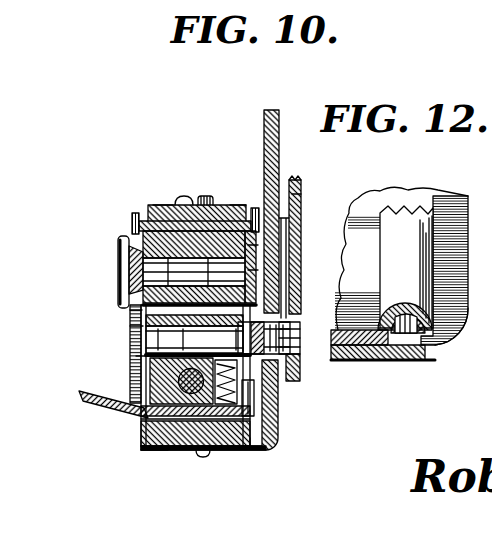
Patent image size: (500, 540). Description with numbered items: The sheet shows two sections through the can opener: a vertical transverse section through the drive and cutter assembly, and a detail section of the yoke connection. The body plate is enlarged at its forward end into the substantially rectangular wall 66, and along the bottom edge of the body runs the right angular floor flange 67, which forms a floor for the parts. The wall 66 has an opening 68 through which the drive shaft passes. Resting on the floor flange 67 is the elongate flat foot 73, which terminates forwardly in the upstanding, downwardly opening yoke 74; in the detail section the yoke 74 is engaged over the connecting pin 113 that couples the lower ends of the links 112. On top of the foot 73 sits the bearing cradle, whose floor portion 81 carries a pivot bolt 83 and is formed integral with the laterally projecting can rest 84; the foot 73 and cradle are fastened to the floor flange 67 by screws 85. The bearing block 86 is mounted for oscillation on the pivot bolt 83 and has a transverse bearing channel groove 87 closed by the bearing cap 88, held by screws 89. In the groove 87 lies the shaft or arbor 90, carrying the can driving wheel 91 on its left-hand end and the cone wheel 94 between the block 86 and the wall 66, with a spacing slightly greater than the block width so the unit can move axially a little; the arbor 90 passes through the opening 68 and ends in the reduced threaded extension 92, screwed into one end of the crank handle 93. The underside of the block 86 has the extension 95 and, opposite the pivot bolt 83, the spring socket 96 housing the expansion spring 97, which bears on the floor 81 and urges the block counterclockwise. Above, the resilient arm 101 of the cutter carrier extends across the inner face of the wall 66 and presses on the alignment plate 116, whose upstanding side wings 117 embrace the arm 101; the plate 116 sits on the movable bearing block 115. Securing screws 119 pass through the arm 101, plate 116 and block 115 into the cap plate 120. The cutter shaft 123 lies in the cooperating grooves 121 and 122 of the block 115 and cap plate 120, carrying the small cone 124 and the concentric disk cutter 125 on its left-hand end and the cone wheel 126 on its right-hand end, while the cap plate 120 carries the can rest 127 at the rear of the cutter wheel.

In FIG. 10, the wall 66 is at (257, 108).
In FIG. 12, the wall 66 is at (445, 197).
In FIG. 10, the floor flange 67 is at (145, 438).
In FIG. 12, the floor flange 67 is at (412, 352).
In FIG. 10, the opening 68 is at (270, 396).
In FIG. 10, the elongate flat foot 73 is at (134, 443).
In FIG. 12, the elongate flat foot 73 is at (337, 352).
In FIG. 12, the yoke 74 is at (413, 300).
In FIG. 10, the floor portion 81 is at (138, 426).
In FIG. 10, the pivot bolt 83 is at (182, 386).
In FIG. 10, the can rest 84 is at (109, 404).
In FIG. 10, the screws 85 is at (196, 450).
In FIG. 10, the bearing block 86 is at (124, 381).
In FIG. 10, the bearing channel groove 87 is at (130, 350).
In FIG. 10, the bearing cap 88 is at (138, 312).
In FIG. 10, the screws 89 is at (122, 302).
In FIG. 10, the shaft or arbor 90 is at (138, 332).
In FIG. 10, the can driving wheel 91 is at (122, 318).
In FIG. 10, the reduced threaded extension 92 is at (292, 358).
In FIG. 10, the crank handle 93 is at (294, 184).
In FIG. 10, the cone wheel 94 is at (289, 309).
In FIG. 10, the extension 95 is at (137, 412).
In FIG. 10, the spring socket 96 is at (243, 438).
In FIG. 10, the expansion spring 97 is at (218, 443).
In FIG. 10, the resilient arm 101 is at (152, 196).
In FIG. 12, the link 112 is at (413, 243).
In FIG. 12, the connecting pin 113 is at (448, 320).
In FIG. 10, the movable bearing block 115 is at (203, 188).
In FIG. 10, the alignment plate 116 is at (233, 197).
In FIG. 10, the side wings 117 is at (246, 200).
In FIG. 10, the securing screws 119 is at (177, 189).
In FIG. 10, the cap plate 120 is at (258, 283).
In FIG. 10, the groove 121 is at (242, 238).
In FIG. 10, the groove 122 is at (242, 263).
In FIG. 10, the cutter shaft 123 is at (136, 198).
In FIG. 10, the small cone 124 is at (134, 230).
In FIG. 10, the disk cutter 125 is at (111, 246).
In FIG. 10, the cone wheel 126 is at (248, 220).
In FIG. 10, the can rest 127 is at (102, 267).